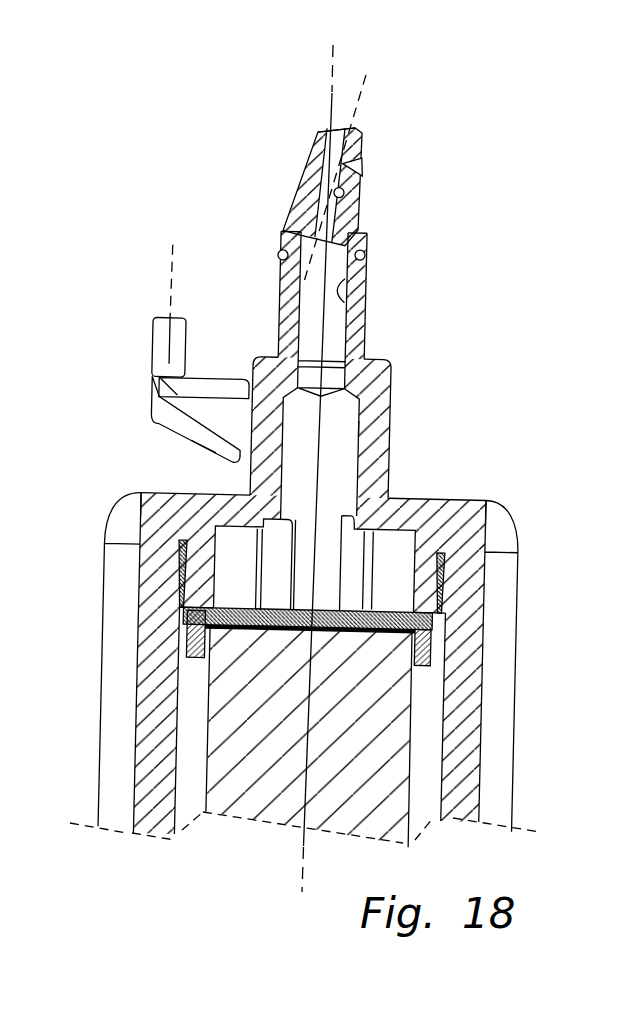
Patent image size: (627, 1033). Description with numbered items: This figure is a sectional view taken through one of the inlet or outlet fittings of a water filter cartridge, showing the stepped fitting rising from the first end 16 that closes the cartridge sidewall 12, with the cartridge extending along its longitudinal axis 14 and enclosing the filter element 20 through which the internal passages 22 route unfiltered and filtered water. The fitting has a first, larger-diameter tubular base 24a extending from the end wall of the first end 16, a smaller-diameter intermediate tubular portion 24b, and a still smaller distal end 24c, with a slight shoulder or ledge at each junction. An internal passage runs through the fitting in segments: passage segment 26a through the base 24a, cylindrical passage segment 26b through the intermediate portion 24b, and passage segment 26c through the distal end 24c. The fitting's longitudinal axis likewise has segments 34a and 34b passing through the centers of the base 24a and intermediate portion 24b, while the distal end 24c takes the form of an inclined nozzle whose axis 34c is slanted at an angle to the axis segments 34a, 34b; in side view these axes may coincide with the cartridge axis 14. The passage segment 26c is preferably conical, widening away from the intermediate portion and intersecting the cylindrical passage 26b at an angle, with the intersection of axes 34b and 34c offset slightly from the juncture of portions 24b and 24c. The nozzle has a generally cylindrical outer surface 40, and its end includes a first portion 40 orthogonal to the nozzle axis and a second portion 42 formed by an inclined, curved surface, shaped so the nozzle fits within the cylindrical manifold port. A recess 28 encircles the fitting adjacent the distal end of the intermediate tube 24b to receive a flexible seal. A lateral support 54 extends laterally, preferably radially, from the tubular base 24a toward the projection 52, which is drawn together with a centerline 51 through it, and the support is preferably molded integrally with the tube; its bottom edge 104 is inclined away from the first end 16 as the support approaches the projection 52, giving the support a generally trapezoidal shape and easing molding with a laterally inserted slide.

The cartridge sidewall 12 is at (503, 623).
The longitudinal axis 14 is at (312, 742).
The first end 16 is at (476, 502).
The filter element 20 is at (387, 778).
The internal passages 22 is at (428, 697).
The tubular base 24a is at (392, 460).
The intermediate tubular portion 24b is at (367, 318).
The distal end 24c is at (363, 198).
The passage segment 26a is at (336, 428).
The passage segment 26b is at (364, 298).
The passage segment 26c is at (346, 192).
The recess 28 is at (368, 255).
The axis segment 34a is at (330, 483).
The axis segment 34b is at (328, 340).
The inclined axis 34c is at (366, 112).
The outer surface 40 is at (323, 126).
The second portion 42 is at (363, 160).
The pin axis 51 is at (168, 258).
The projection 52 is at (152, 349).
The lateral support 54 is at (200, 413).
The bottom edge 104 is at (200, 447).